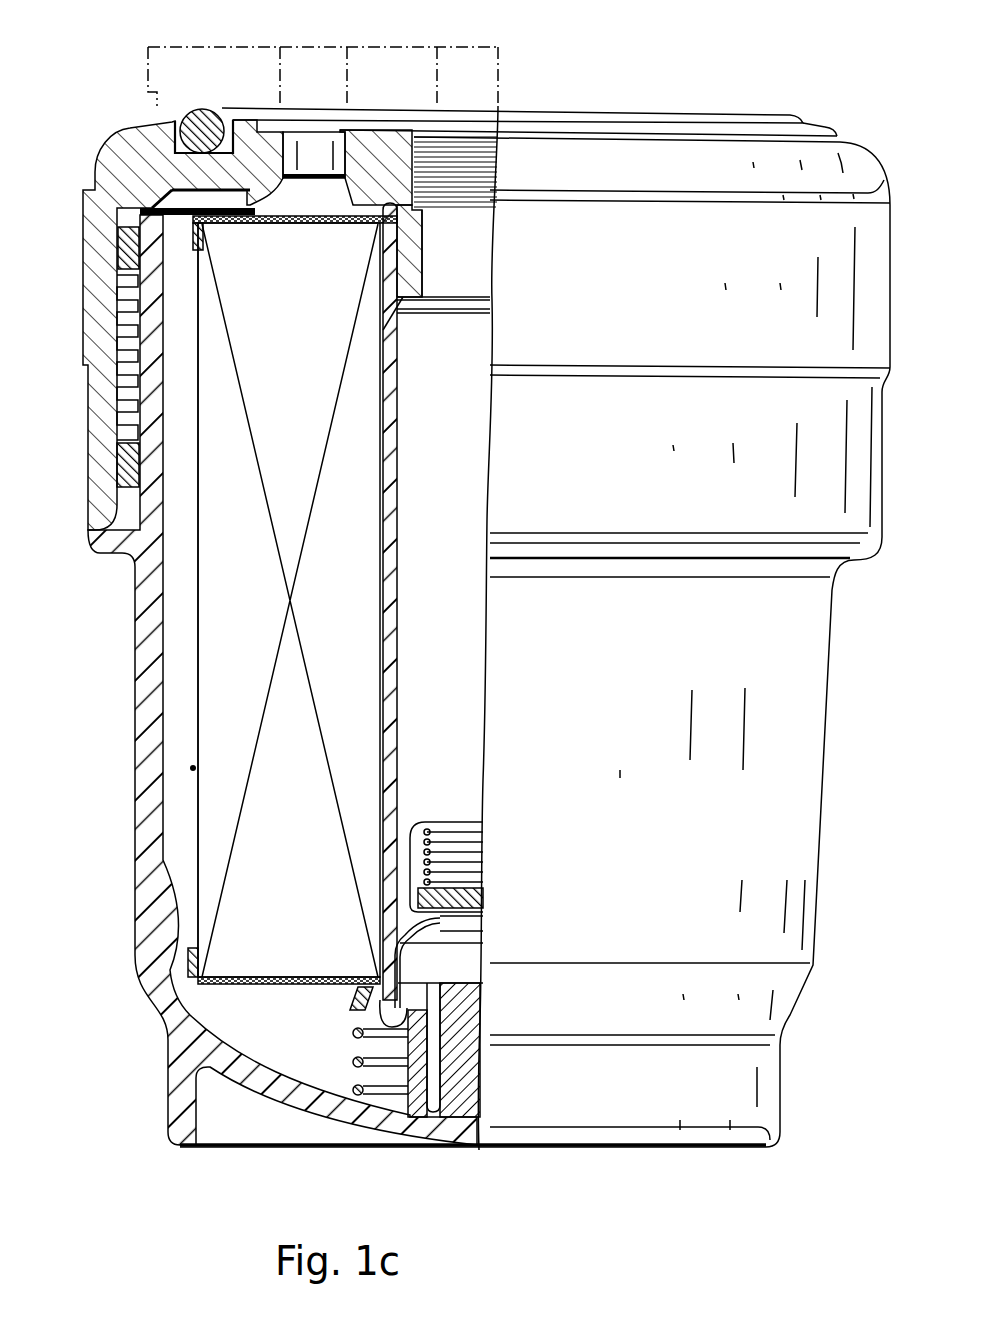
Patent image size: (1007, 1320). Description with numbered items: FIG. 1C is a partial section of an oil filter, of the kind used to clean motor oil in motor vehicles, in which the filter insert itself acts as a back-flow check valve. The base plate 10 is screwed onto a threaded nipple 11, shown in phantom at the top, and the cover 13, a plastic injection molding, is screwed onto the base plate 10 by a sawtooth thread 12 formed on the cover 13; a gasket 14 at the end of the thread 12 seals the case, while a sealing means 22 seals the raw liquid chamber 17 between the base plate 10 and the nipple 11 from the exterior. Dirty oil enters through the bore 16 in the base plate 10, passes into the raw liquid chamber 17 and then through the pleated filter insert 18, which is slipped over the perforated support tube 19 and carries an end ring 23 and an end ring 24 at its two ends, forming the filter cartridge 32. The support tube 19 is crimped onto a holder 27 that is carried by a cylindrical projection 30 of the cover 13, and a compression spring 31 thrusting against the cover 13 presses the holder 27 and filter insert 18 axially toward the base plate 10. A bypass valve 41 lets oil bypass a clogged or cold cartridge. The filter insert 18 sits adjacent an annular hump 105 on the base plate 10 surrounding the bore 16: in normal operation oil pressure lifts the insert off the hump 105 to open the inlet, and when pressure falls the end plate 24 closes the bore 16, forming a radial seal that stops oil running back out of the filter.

The base plate 10 is at (92, 232).
The threaded nipple 11 is at (150, 63).
The sawtooth thread 12 is at (118, 391).
The cover 13 is at (145, 716).
The gasket 14 is at (118, 466).
The bore 16 is at (314, 138).
The raw liquid chamber 17 is at (177, 332).
The filter insert 18 is at (198, 640).
The support tube 19 is at (393, 530).
The sealing means 22 is at (153, 124).
The end ring 23 is at (275, 977).
The end ring 24 is at (290, 226).
The holder 27 is at (462, 978).
The cylindrical projection 30 is at (418, 1082).
The compression spring 31 is at (353, 1028).
The filter cartridge 32 is at (193, 768).
The bypass valve 41 is at (490, 860).
The annular hump 105 is at (362, 212).